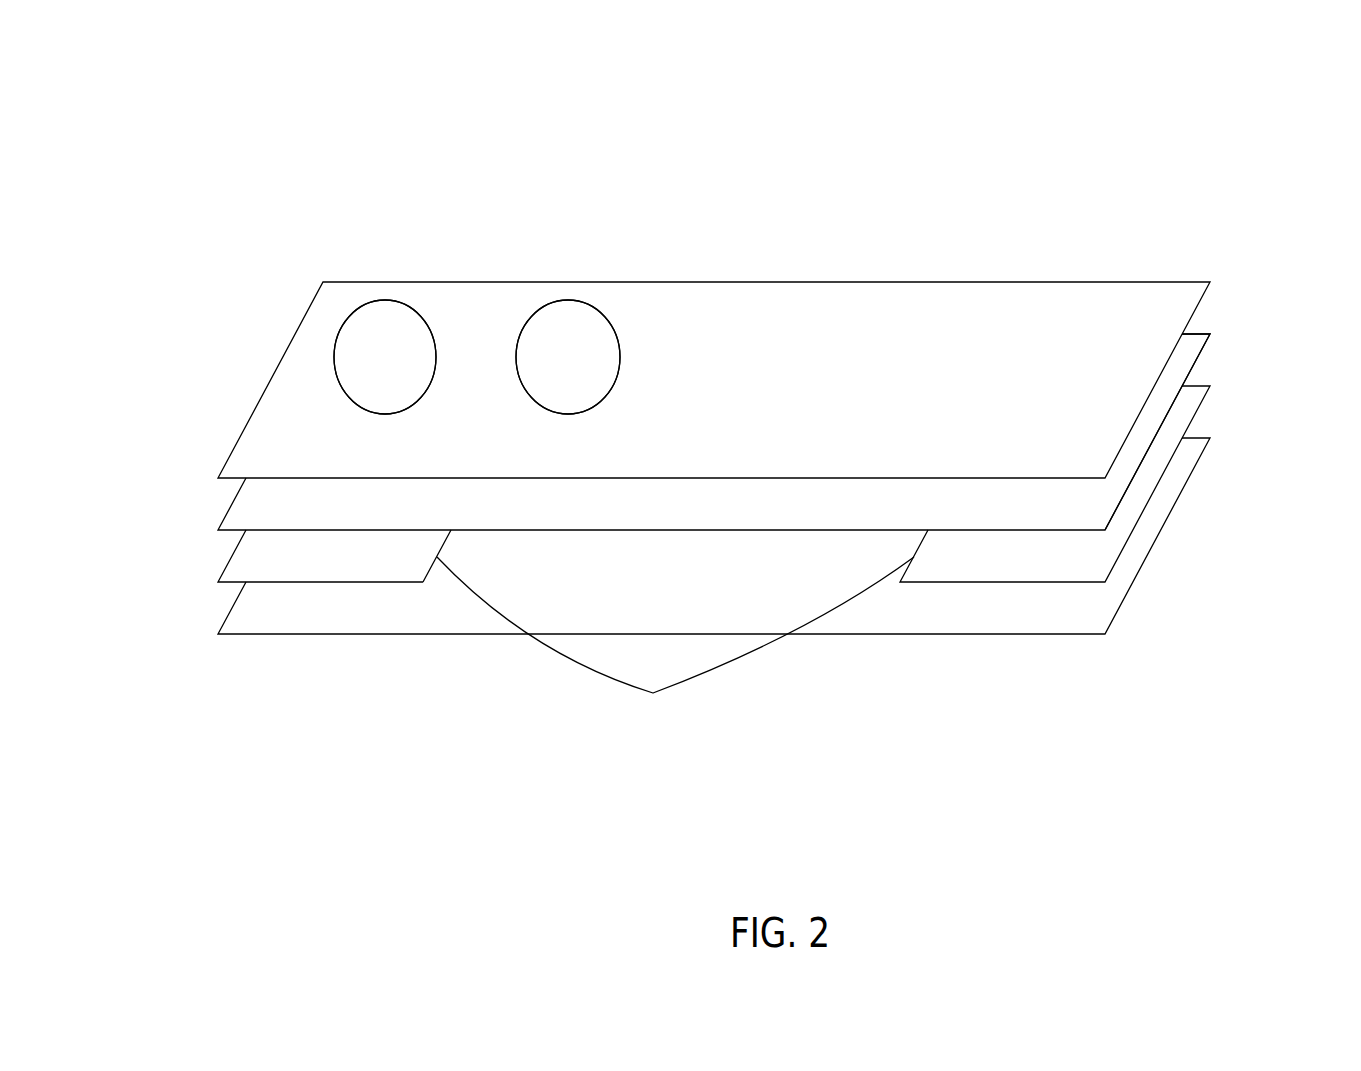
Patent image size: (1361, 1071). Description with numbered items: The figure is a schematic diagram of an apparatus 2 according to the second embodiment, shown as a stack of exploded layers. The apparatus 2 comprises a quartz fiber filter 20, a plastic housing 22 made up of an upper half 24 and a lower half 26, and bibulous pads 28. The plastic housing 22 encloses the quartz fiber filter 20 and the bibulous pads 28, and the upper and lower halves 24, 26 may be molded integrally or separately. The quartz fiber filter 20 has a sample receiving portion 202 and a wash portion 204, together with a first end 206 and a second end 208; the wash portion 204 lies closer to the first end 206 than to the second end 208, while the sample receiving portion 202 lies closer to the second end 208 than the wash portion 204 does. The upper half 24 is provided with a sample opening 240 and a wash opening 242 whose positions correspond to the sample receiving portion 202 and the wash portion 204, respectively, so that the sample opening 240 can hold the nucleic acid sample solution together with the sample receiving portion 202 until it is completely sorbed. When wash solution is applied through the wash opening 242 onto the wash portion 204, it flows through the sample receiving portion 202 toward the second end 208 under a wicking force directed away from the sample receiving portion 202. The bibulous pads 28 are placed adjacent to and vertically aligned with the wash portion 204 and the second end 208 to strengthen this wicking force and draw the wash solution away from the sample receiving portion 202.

The apparatus 2 is at (322, 120).
The upper half 24 is at (873, 315).
The wash opening 242 is at (383, 300).
The sample opening 240 is at (565, 302).
The sample receiving portion 202 is at (595, 355).
The wash portion 204 is at (352, 375).
The plastic housing 22 is at (733, 550).
The first end 206 is at (253, 508).
The second end 208 is at (1025, 507).
The lower half 26 is at (292, 613).
The bibulous pads 28 is at (675, 652).
The quartz fiber filter 20 is at (1117, 507).